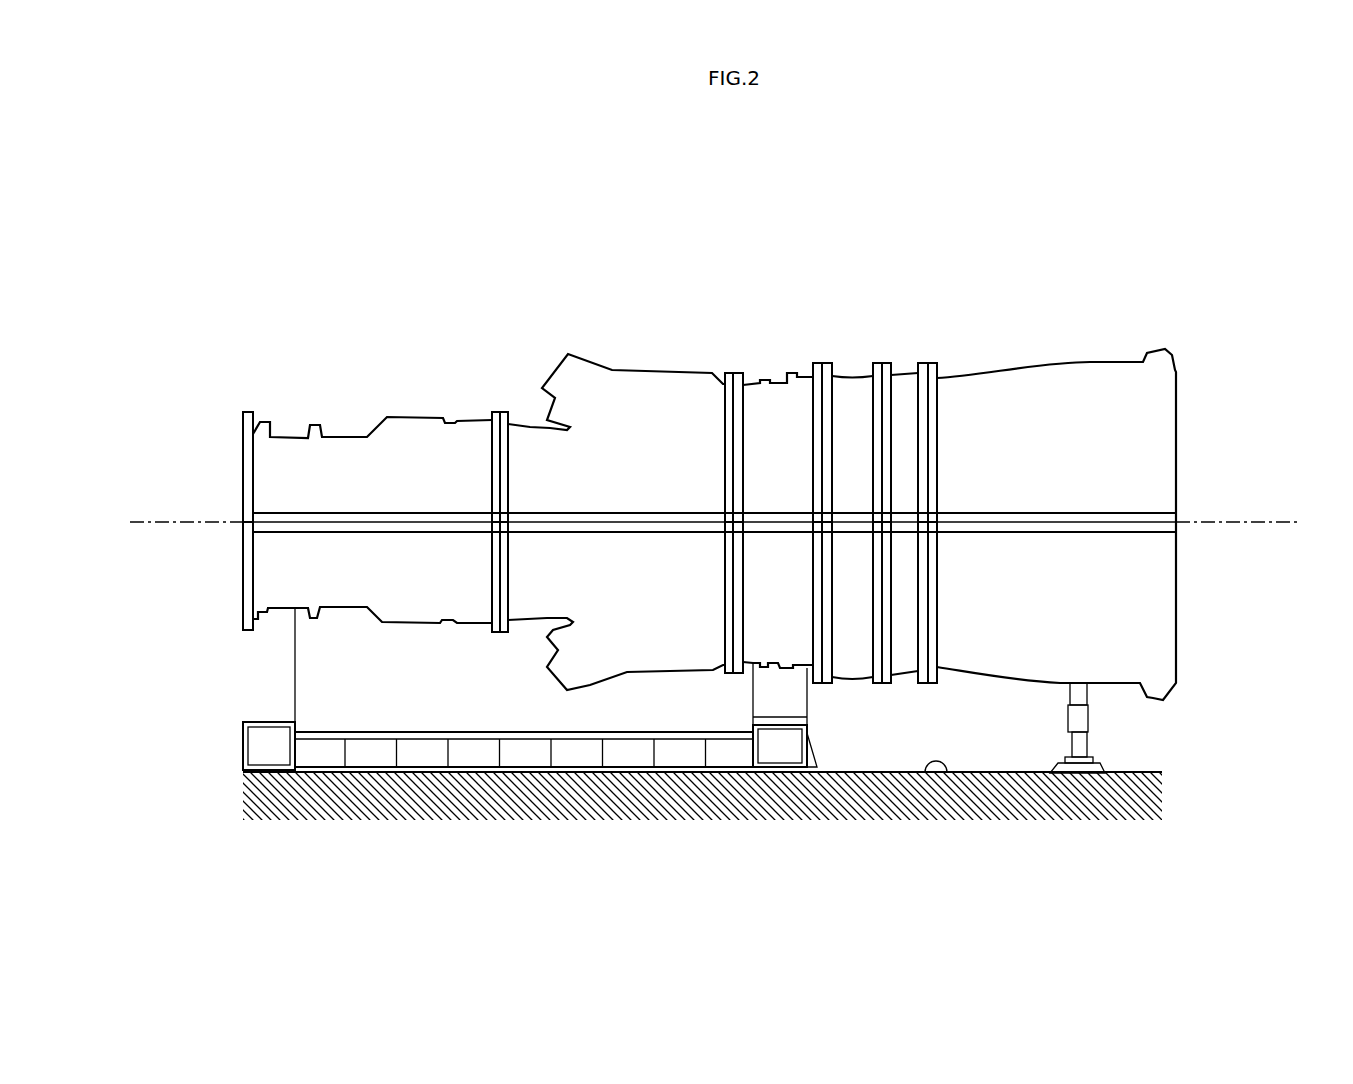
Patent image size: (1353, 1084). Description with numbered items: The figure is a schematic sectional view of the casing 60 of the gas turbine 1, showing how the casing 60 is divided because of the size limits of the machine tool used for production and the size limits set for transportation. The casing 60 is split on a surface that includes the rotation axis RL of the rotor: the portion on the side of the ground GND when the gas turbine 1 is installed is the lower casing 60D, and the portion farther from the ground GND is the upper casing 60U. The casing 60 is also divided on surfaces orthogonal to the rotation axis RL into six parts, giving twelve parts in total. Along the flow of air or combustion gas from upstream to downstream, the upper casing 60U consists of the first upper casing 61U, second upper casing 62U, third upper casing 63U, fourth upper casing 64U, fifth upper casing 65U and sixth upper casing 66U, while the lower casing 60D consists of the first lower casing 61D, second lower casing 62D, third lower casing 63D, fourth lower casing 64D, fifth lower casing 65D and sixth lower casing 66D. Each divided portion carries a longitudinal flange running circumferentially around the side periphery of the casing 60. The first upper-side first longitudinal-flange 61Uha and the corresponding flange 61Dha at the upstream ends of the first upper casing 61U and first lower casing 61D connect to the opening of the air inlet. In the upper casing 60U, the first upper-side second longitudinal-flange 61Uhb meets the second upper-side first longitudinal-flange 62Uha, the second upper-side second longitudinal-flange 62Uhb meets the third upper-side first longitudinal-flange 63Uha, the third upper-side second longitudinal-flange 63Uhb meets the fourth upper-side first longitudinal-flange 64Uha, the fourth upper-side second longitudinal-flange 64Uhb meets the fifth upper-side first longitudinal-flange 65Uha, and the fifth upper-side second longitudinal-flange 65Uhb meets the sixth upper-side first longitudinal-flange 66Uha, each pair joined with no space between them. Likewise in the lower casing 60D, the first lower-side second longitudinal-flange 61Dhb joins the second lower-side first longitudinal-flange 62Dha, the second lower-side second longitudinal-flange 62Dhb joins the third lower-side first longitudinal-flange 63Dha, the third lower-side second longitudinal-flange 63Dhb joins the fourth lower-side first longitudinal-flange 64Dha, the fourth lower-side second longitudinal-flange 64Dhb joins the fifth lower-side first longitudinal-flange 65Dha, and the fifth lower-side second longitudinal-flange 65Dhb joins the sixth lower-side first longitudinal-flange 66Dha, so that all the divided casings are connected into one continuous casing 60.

The gas turbine 1 is at (1079, 177).
The casing 60 is at (961, 239).
The upper casing 60U is at (207, 387).
The lower casing 60D is at (207, 532).
The rotation axis RL is at (697, 524).
The ground GND is at (940, 774).
The first upper casing 61U is at (400, 417).
The first upper-side first longitudinal-flange 61Uha is at (257, 460).
The first upper-side second longitudinal-flange 61Uhb is at (490, 446).
The first lower casing 61D is at (397, 628).
The first upper-side first longitudinal-flange 61Dha is at (255, 580).
The first lower-side second longitudinal-flange 61Dhb is at (490, 598).
The second upper casing 62U is at (566, 354).
The second upper-side first longitudinal-flange 62Uha is at (500, 412).
The second upper-side second longitudinal-flange 62Uhb is at (730, 374).
The second lower casing 62D is at (553, 677).
The second lower-side first longitudinal-flange 62Dha is at (500, 633).
The second lower-side second longitudinal-flange 62Dhb is at (730, 673).
The third upper casing 63U is at (772, 379).
The third upper-side first longitudinal-flange 63Uha is at (740, 375).
The third upper-side second longitudinal-flange 63Uhb is at (817, 363).
The third lower casing 63D is at (780, 669).
The third lower-side first longitudinal-flange 63Dha is at (738, 673).
The third lower-side second longitudinal-flange 63Dhb is at (813, 655).
The fourth upper casing 64U is at (850, 364).
The fourth upper-side first longitudinal-flange 64Uha is at (825, 363).
The fourth upper-side second longitudinal-flange 64Uhb is at (878, 363).
The fourth lower casing 64D is at (853, 677).
The fourth lower-side first longitudinal-flange 64Dha is at (825, 683).
The fourth lower-side second longitudinal-flange 64Dhb is at (877, 683).
The fifth upper casing 65U is at (903, 364).
The fifth upper-side first longitudinal-flange 65Uha is at (885, 363).
The fifth upper-side second longitudinal-flange 65Uhb is at (923, 365).
The fifth lower casing 65D is at (907, 675).
The fifth lower-side first longitudinal-flange 65Dha is at (886, 683).
The fifth lower-side second longitudinal-flange 65Dhb is at (922, 683).
The sixth upper casing 66U is at (1060, 362).
The sixth upper-side first longitudinal-flange 66Uha is at (940, 364).
The sixth lower casing 66D is at (1010, 680).
The sixth lower-side first longitudinal-flange 66Dha is at (938, 645).